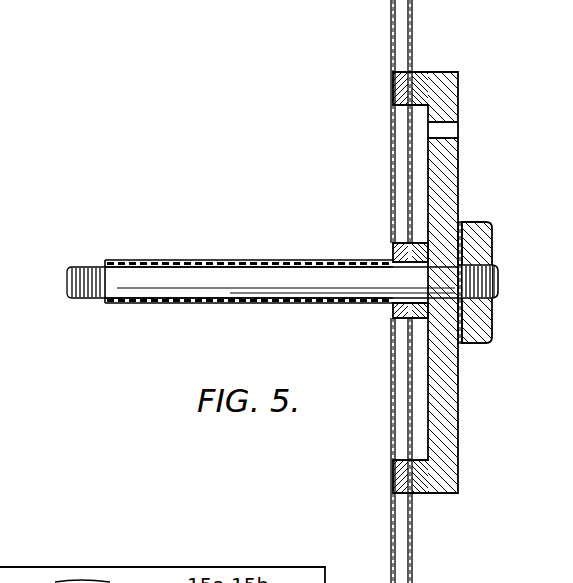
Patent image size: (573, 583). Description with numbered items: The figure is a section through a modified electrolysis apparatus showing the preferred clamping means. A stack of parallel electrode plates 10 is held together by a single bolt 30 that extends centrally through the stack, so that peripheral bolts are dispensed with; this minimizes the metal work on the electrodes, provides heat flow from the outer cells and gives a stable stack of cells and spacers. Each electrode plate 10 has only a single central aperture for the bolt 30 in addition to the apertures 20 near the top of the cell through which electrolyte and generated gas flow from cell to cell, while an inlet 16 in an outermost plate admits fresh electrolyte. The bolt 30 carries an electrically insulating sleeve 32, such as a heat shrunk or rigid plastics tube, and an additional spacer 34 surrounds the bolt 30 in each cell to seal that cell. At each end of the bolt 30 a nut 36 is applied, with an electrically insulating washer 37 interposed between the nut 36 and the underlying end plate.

The electrode plates 10 is at (413, 291).
The inlet 16 is at (446, 132).
The apertures 20 is at (408, 130).
The bolt 30 is at (202, 280).
The electrically insulating sleeve 32 is at (338, 305).
The additional spacer 34 is at (417, 243).
The nut 36 is at (486, 344).
The electrically insulating washer 37 is at (460, 223).